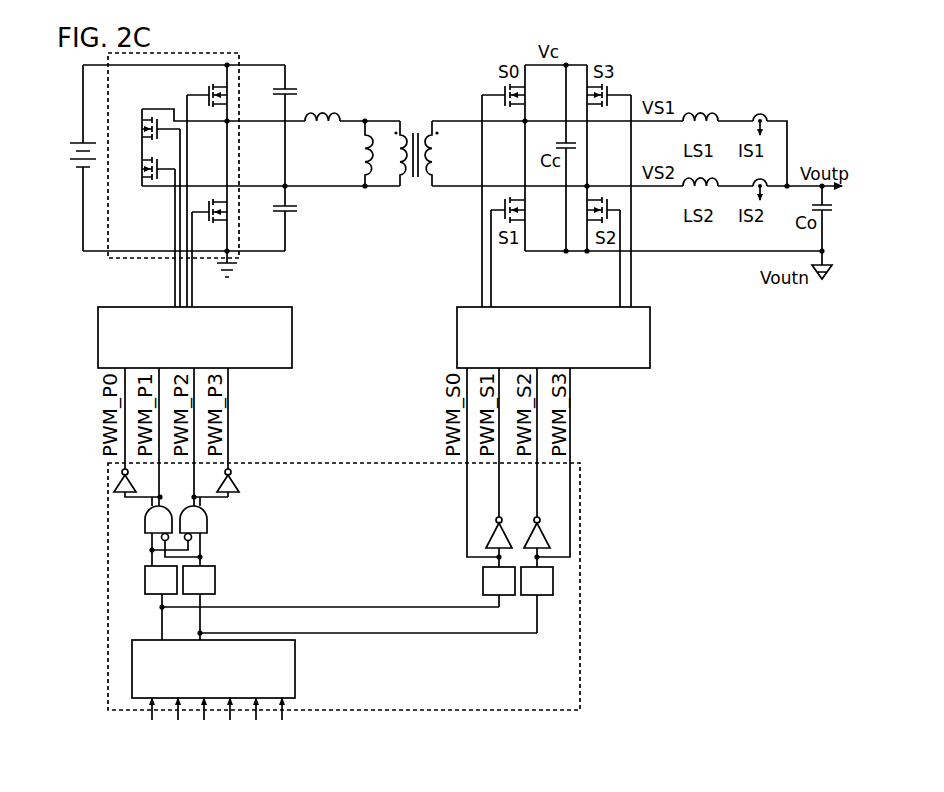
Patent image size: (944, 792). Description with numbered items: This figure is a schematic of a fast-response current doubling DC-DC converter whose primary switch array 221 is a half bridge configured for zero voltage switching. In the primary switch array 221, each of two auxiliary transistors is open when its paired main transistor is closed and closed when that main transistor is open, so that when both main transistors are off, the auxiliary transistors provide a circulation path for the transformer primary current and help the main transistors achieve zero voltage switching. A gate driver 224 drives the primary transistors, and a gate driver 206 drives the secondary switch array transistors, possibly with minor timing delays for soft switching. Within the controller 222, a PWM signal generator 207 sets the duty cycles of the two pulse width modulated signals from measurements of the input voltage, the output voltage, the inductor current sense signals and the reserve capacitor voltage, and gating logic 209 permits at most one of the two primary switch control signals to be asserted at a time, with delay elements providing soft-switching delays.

The primary switch array 221 is at (127, 259).
The primary gate driver 224 is at (247, 370).
The gate driver 206 is at (605, 370).
The gating logic 209 is at (222, 506).
The PWM signal generator 207 is at (296, 684).
The controller 222 is at (522, 711).